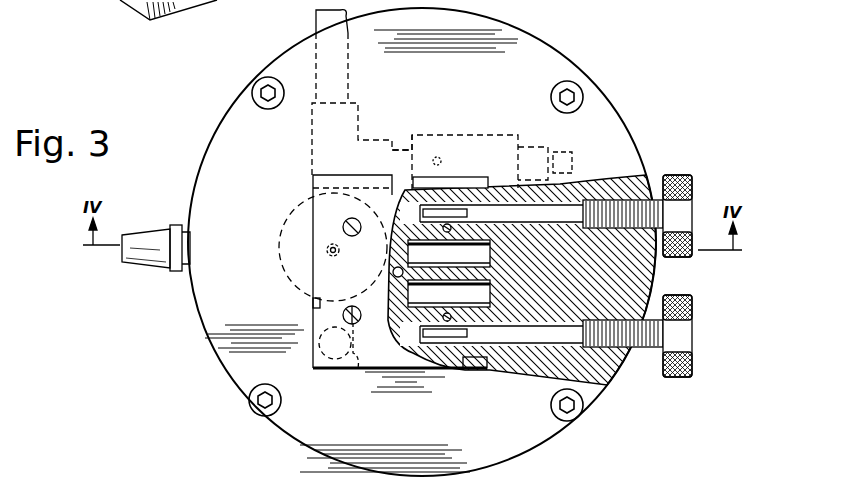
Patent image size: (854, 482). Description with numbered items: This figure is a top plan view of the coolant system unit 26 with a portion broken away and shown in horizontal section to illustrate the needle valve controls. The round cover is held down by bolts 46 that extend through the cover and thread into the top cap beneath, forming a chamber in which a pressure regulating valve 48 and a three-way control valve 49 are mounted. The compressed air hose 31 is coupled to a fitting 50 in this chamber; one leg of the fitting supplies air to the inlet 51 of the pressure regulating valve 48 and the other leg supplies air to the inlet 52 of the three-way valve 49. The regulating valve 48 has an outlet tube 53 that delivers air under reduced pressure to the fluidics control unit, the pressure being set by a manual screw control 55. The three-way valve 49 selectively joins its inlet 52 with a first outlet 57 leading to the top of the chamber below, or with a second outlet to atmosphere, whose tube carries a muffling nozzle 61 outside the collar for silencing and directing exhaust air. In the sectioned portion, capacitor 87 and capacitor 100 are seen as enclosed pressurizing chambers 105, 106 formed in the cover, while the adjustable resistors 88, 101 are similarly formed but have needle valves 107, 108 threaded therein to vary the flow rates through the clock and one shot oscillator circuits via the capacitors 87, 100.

The circular plate / disk 26 is at (545, 50).
The compressed air hose 31 is at (316, 24).
The bolts 46 is at (258, 80).
The pressure regulating valve 48 is at (498, 134).
The three-way control valve 49 is at (288, 255).
The fitting 50 is at (312, 140).
The inlet of the pressure reducing valve 51 is at (412, 150).
The inlet of the three-way valve 52 is at (313, 193).
The outlet tube 53 is at (418, 185).
The manual screw control 55 is at (572, 165).
The first outlet 57 is at (350, 368).
The muffling nozzle 61 is at (143, 232).
The capacitor 87 is at (449, 293).
The adjustable resistor 88 is at (455, 342).
The capacitor 100 is at (449, 253).
The adjustable resistor 101 is at (458, 206).
The enclosed pressurizing chamber 105 is at (492, 302).
The enclosed pressurizing chamber 106 is at (492, 262).
The needle valve 107 is at (677, 377).
The needle valve 108 is at (690, 180).